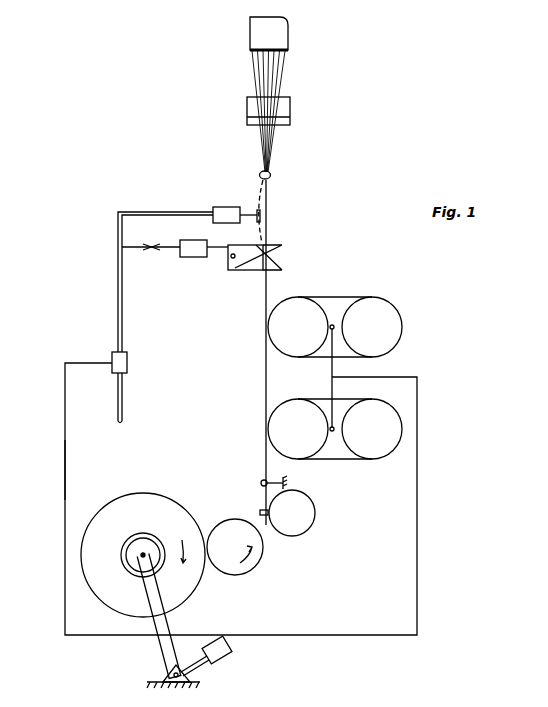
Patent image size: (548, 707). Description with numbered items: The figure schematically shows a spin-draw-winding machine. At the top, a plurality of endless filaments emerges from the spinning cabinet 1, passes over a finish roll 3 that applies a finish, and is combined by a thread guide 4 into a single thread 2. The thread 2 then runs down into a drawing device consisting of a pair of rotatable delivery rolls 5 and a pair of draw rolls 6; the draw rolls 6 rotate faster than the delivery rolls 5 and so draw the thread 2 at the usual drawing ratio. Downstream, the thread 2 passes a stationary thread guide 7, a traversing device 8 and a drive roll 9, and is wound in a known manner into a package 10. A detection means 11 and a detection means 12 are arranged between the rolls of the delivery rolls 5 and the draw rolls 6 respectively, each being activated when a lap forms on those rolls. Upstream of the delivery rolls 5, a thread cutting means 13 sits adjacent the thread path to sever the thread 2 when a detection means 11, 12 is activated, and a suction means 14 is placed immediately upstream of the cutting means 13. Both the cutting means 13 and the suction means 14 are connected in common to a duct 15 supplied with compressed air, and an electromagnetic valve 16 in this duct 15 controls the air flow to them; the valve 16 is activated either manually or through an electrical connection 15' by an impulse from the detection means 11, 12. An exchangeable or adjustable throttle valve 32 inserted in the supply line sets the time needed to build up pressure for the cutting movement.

The spinning cabinet 1 is at (278, 33).
The thread 2 is at (268, 200).
The finish roll 3 is at (285, 108).
The thread guide 4 is at (270, 173).
The delivery rolls 5 is at (370, 307).
The draw rolls 6 is at (372, 440).
The stationary thread guide 7 is at (260, 482).
The traversing device 8 is at (258, 512).
The drive roll 9 is at (262, 560).
The package 10 is at (135, 497).
The detection means 11 is at (347, 312).
The detection means 12 is at (335, 427).
The thread cutting means 13 is at (197, 252).
The suction means 14 is at (233, 208).
The duct 15 is at (138, 317).
The electrical connection 15' is at (41, 470).
The electromagnetic valve 16 is at (122, 360).
The throttle valve 32 is at (150, 251).